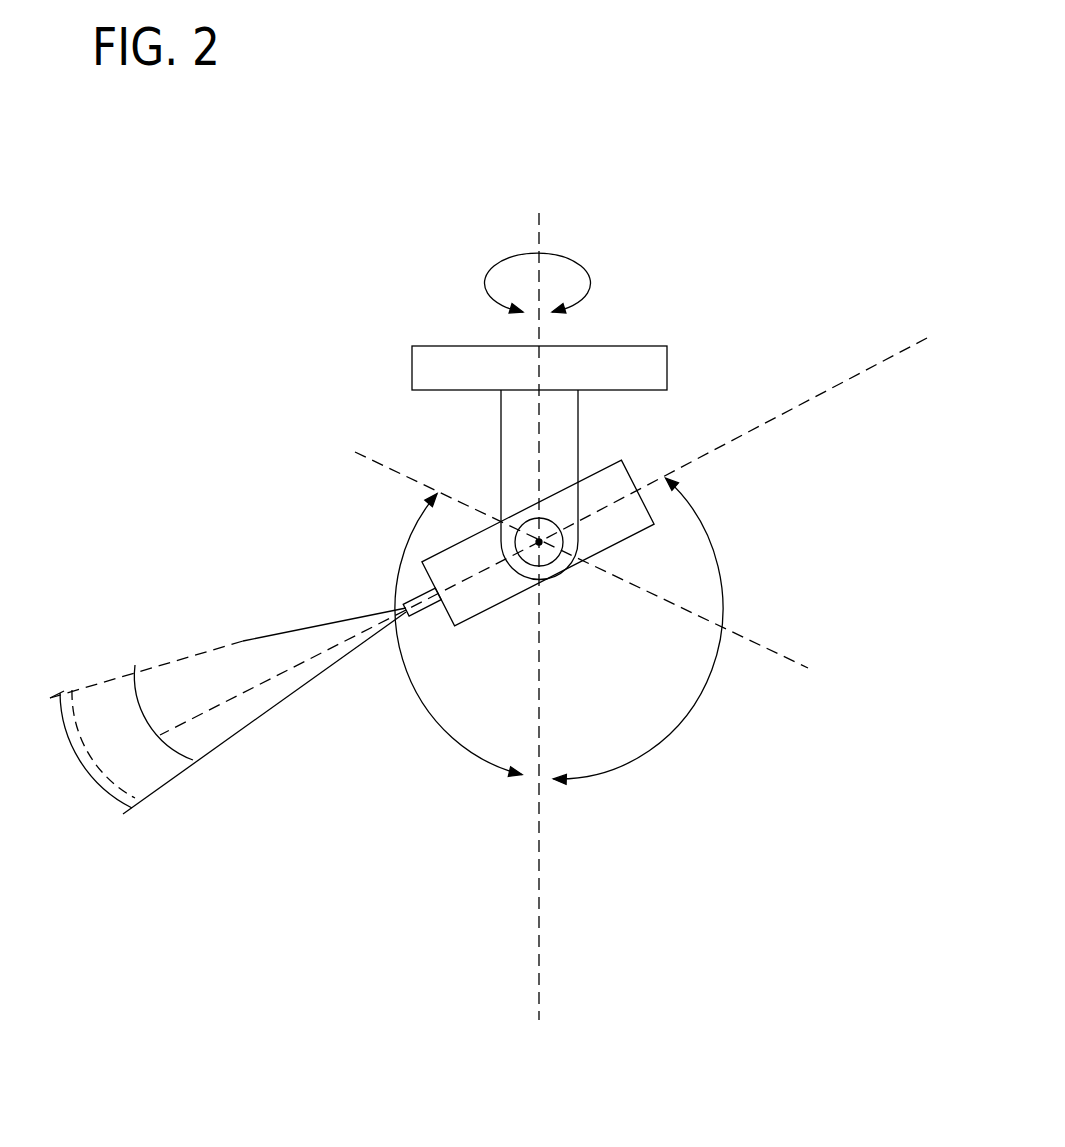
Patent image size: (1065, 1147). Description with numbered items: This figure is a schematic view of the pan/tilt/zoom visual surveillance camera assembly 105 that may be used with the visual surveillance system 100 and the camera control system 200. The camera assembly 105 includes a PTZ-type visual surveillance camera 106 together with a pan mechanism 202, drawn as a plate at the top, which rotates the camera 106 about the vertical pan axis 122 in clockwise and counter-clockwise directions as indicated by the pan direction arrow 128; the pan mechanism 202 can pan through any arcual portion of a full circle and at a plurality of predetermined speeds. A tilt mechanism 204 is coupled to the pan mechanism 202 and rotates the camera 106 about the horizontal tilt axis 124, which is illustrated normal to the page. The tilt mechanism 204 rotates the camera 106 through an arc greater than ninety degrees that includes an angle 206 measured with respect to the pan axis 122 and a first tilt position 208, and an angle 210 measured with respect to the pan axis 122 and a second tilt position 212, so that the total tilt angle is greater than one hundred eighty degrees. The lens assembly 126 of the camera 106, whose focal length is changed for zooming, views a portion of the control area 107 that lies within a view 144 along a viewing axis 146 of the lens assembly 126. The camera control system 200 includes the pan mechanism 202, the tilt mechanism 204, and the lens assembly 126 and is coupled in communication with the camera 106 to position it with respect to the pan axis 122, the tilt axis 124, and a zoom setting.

The visual surveillance system 100 is at (323, 198).
The visual surveillance camera assembly 105 is at (385, 302).
The camera 106 is at (637, 536).
The control area 107 is at (86, 847).
The vertical pan axis 122 is at (540, 333).
The horizontal tilt axis 124 is at (540, 545).
The lens assembly 126 is at (420, 616).
The pan direction arrow 128 is at (574, 266).
The view 144 is at (132, 725).
The viewing axis 146 is at (272, 676).
The camera control system 200 is at (702, 258).
The pan mechanism 202 is at (667, 365).
The tilt mechanism 204 is at (525, 514).
The angle 206 is at (485, 758).
The first tilt position 208 is at (776, 652).
The angle 210 is at (630, 760).
The second tilt position 212 is at (906, 352).